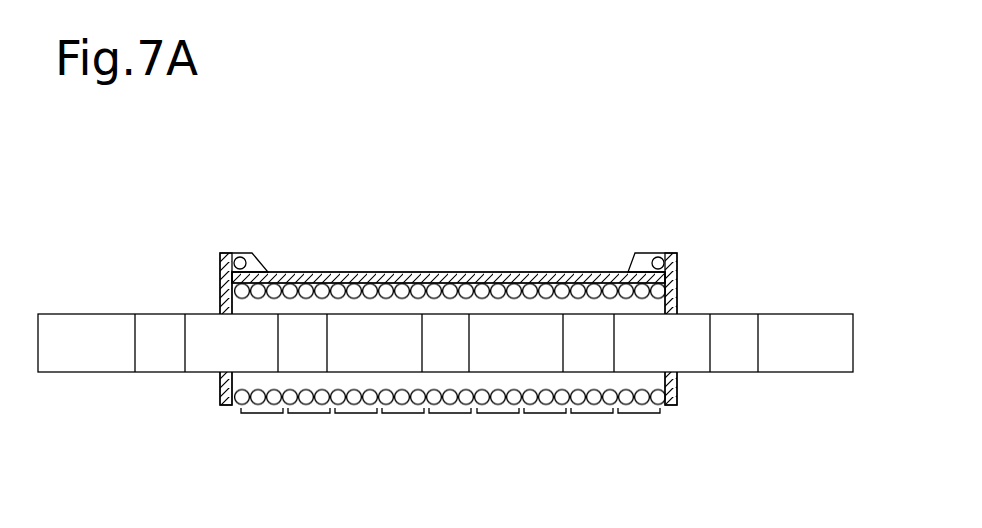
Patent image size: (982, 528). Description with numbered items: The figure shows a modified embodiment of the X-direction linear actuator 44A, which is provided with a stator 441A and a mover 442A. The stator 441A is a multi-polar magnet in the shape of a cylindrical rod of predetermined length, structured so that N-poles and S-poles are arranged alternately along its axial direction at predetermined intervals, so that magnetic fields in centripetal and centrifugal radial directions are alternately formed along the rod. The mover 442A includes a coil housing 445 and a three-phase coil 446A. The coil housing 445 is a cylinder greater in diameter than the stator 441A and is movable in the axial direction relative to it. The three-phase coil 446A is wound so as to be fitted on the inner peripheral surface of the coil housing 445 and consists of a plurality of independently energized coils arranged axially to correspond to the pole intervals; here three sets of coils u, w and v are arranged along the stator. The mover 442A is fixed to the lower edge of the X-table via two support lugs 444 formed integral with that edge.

The X-direction linear actuator 44A is at (483, 243).
The stator 441A is at (748, 372).
The mover 442A is at (222, 404).
The support lugs 444 is at (262, 258).
The coil housing 445 is at (360, 272).
The three-phase coil 446A is at (483, 402).